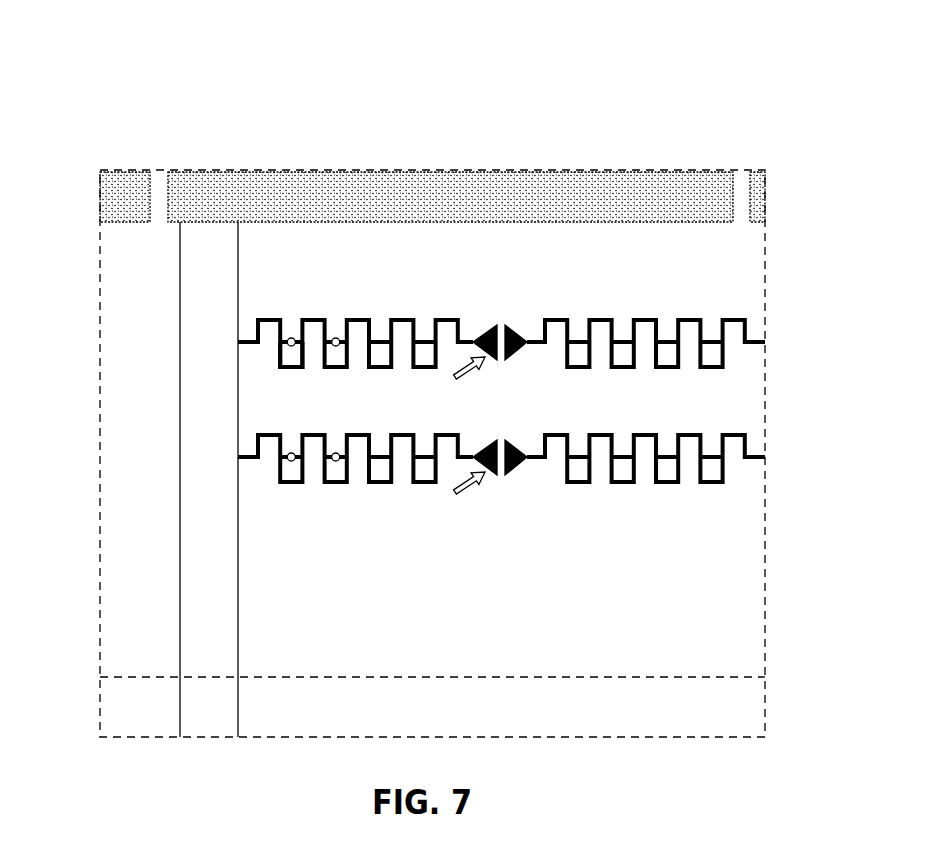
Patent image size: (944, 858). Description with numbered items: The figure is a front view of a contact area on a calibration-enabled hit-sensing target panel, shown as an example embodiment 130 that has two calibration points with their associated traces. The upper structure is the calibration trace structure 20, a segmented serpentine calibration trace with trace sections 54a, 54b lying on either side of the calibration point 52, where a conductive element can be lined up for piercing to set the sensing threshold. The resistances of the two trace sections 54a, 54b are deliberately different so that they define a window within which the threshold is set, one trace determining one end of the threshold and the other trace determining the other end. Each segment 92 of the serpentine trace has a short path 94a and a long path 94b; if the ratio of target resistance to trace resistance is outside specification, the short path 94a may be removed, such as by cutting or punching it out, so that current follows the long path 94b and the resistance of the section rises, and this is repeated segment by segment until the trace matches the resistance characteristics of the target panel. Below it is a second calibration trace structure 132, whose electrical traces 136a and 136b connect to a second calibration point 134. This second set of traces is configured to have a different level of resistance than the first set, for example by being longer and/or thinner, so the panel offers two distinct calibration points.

The example embodiment 130 is at (150, 62).
The calibration trace structure 20 is at (735, 241).
The trace section 54a is at (243, 277).
The calibration point 52 is at (473, 277).
The trace section 54b is at (538, 277).
The short path 94a is at (292, 337).
The long path 94b is at (292, 364).
The segment 92 is at (279, 379).
The second calibration trace structure 132 is at (547, 482).
The electrical trace 136a is at (243, 520).
The second calibration point 134 is at (473, 520).
The electrical trace 136b is at (646, 504).